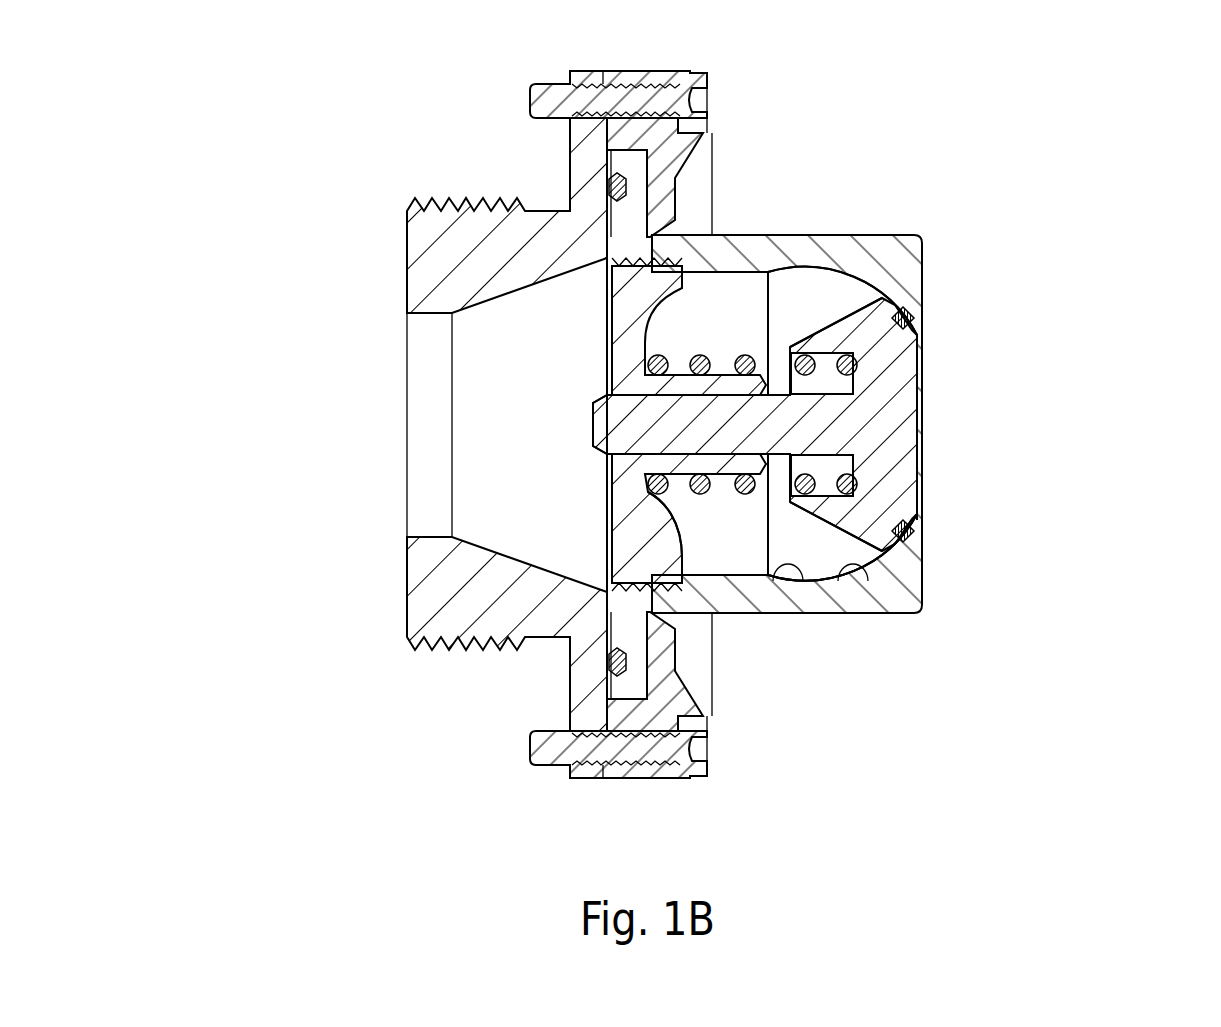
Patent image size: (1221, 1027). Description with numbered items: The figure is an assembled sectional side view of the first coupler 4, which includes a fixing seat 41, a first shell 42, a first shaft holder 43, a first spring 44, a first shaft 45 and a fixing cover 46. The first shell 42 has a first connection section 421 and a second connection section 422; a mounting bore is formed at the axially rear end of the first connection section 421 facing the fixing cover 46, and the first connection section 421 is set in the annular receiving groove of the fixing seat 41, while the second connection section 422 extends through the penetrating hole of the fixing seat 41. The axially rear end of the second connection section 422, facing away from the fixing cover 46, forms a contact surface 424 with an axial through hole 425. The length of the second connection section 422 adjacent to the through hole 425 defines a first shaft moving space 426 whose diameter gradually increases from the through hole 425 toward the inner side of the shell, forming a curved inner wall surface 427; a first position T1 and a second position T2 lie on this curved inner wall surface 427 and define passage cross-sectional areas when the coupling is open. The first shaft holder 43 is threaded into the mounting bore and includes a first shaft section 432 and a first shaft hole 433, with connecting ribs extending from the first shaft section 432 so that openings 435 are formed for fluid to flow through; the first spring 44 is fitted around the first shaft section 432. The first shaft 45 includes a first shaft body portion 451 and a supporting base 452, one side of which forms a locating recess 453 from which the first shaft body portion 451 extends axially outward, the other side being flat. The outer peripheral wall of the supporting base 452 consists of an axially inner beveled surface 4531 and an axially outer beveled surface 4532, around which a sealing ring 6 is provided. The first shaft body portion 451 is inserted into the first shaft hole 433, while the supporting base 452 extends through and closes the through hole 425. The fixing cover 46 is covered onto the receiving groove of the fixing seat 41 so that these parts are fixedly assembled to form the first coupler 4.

The first coupler 4 is at (49, 89).
The fixing seat 41 is at (635, 72).
The first shell 42 is at (890, 447).
The first connection section 421 is at (635, 655).
The second connection section 422 is at (793, 576).
The contact surface 424 is at (925, 278).
The through hole 425 is at (918, 334).
The first shaft moving space 426 is at (808, 300).
The curved inner wall surface 427 is at (875, 590).
The first shaft holder 43 is at (632, 340).
The first shaft section 432 is at (718, 380).
The first shaft hole 433 is at (632, 426).
The openings 435 is at (633, 538).
The first spring 44 is at (745, 380).
The first shaft 45 is at (865, 411).
The first shaft body portion 451 is at (880, 395).
The supporting base 452 is at (905, 447).
The locating recess 453 is at (880, 418).
The axially inner beveled surface 4531 is at (835, 315).
The axially outer beveled surface 4532 is at (905, 297).
The fixing cover 46 is at (407, 587).
The sealing ring 6 is at (905, 540).
The first position T1 is at (920, 517).
The second position T2 is at (790, 565).